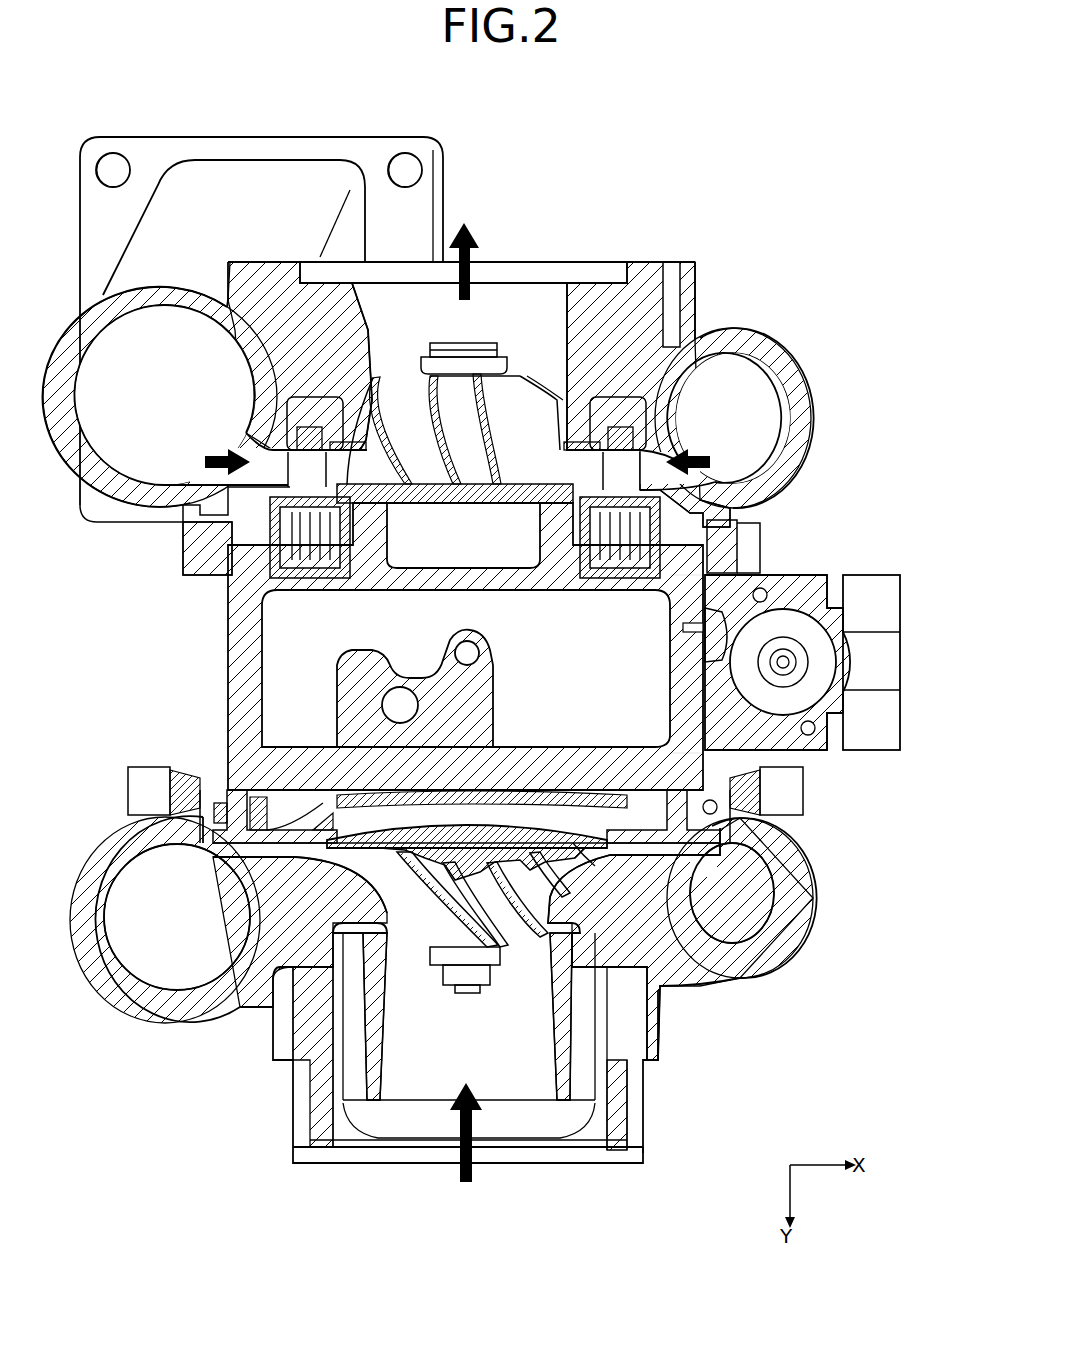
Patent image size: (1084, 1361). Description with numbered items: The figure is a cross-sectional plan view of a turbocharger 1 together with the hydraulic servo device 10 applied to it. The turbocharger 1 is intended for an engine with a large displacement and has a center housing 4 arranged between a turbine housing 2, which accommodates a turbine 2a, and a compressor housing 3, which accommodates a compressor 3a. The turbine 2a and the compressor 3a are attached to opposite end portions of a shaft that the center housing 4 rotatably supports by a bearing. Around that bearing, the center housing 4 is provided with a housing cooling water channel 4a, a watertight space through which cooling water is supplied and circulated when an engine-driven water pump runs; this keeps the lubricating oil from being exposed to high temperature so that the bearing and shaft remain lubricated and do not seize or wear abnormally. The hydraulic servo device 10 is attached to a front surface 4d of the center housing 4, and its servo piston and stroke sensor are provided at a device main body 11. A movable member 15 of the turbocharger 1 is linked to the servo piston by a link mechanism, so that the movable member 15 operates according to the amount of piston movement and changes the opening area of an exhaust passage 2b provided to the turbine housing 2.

The turbocharger 1 is at (708, 148).
The turbine housing 2 is at (640, 283).
The turbine 2a is at (540, 422).
The exhaust passage 2b is at (302, 465).
The compressor housing 3 is at (630, 1043).
The compressor 3a is at (520, 935).
The center housing 4 is at (500, 673).
The housing cooling water channel 4a is at (260, 662).
The front surface 4d is at (720, 718).
The hydraulic servo device 10 is at (836, 628).
The device main body 11 is at (882, 602).
The movable member 15 is at (565, 550).